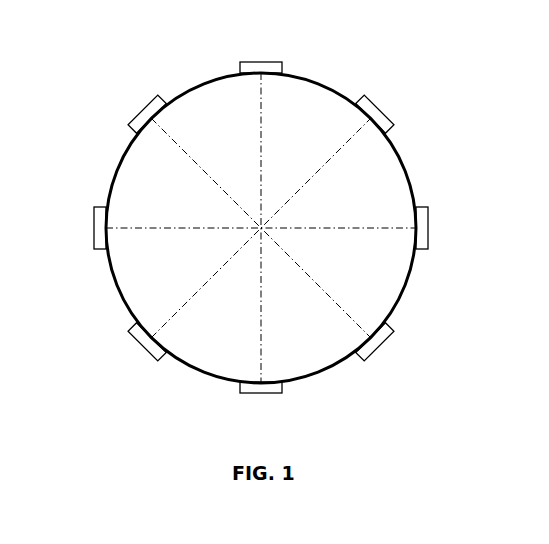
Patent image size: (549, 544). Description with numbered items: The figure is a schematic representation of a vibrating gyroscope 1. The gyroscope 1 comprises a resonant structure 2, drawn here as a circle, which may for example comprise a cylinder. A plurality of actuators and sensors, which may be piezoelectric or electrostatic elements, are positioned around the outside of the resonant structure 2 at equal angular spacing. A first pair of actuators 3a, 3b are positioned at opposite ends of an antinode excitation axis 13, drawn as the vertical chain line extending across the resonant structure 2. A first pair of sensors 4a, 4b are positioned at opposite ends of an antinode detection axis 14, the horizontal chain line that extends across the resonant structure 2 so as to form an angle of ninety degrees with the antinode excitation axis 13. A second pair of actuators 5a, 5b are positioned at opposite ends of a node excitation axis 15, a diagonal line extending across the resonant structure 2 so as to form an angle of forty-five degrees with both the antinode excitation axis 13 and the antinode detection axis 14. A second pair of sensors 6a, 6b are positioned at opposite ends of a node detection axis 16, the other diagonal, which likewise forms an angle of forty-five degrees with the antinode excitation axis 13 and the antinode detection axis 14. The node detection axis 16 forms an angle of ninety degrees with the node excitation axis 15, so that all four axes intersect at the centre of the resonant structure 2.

The vibrating gyroscope 1 is at (159, 44).
The resonant structure 2 is at (119, 170).
The first pair of actuators 3a is at (266, 62).
The first pair of actuators 3b is at (258, 394).
The first pair of sensors 4a is at (94, 224).
The first pair of sensors 4b is at (428, 224).
The second pair of actuators 5a is at (143, 349).
The second pair of actuators 5b is at (380, 110).
The second pair of sensors 6a is at (146, 110).
The second pair of sensors 6b is at (383, 344).
The antinode excitation axis 13 is at (262, 101).
The antinode detection axis 14 is at (353, 228).
The node excitation axis 15 is at (330, 158).
The node detection axis 16 is at (340, 308).